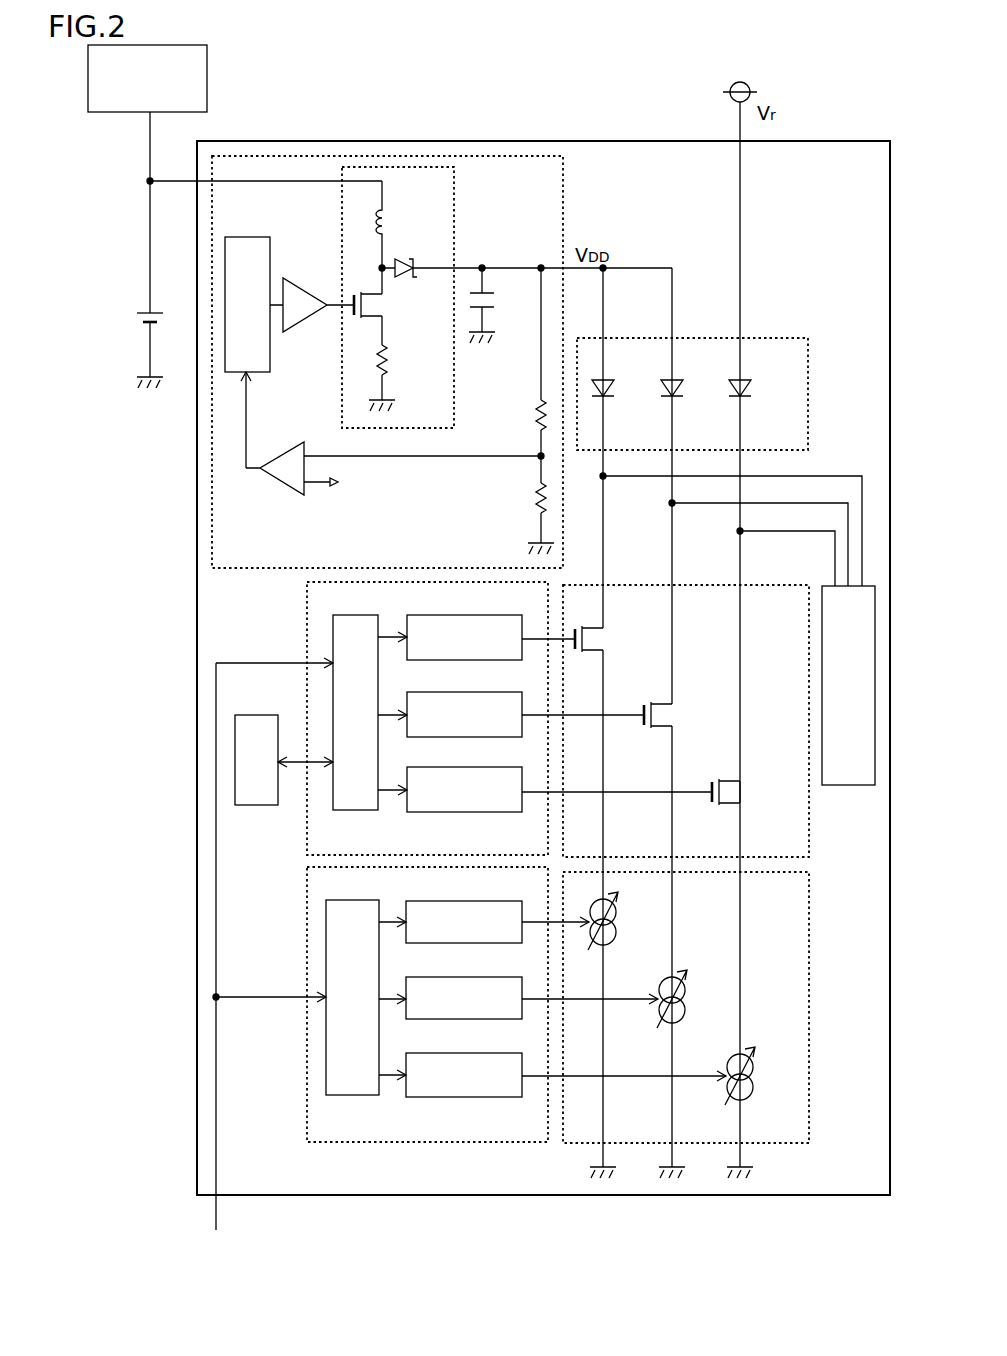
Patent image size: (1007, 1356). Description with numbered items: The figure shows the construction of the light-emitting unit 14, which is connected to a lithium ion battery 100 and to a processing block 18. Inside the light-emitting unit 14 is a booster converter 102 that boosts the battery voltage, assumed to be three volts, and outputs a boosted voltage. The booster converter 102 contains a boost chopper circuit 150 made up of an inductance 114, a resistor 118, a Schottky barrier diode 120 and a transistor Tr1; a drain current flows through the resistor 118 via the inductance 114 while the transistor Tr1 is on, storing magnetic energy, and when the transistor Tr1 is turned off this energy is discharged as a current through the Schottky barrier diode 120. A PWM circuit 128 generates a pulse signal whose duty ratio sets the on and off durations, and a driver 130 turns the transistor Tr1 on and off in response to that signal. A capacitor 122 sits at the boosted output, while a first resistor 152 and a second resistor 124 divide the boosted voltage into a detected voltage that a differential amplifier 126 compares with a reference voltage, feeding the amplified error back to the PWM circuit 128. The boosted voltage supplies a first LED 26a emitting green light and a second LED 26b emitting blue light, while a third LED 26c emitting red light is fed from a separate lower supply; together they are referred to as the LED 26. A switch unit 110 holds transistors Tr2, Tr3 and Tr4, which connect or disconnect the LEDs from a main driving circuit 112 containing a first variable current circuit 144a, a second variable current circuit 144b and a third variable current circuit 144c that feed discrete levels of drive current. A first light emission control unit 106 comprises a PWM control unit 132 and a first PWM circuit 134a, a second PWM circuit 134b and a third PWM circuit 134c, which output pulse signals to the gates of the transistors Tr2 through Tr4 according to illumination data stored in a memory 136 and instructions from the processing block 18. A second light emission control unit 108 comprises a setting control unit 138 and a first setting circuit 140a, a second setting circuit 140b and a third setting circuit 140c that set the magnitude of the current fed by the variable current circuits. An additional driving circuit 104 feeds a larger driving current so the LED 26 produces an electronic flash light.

The light-emitting unit 14 is at (475, 141).
The processing block 18 is at (208, 76).
The lithium ion battery 100 is at (143, 322).
The booster converter 102 is at (563, 187).
The additional driving circuit 104 is at (850, 786).
The first light emission control unit 106 is at (399, 718).
The second light emission control unit 108 is at (399, 1004).
The switch unit 110 is at (699, 723).
The main driving circuit 112 is at (699, 1007).
The inductance 114 is at (384, 213).
The resistor 118 is at (390, 360).
The Schottky barrier diode 120 is at (405, 257).
The capacitor 122 is at (494, 300).
The second resistor 124 is at (534, 498).
The differential amplifier 126 is at (275, 440).
The PWM circuit 128 is at (246, 236).
The driver 130 is at (300, 277).
The PWM control unit 132 is at (365, 615).
The first PWM circuit 134a is at (470, 616).
The second PWM circuit 134b is at (470, 693).
The third PWM circuit 134c is at (470, 768).
The memory 136 is at (257, 714).
The setting control unit 138 is at (365, 900).
The first setting circuit 140a is at (470, 901).
The second setting circuit 140b is at (470, 977).
The third setting circuit 140c is at (470, 1053).
The first variable current circuit 144a is at (612, 948).
The second variable current circuit 144b is at (681, 1025).
The third variable current circuit 144c is at (749, 1103).
The boost chopper circuit 150 is at (455, 232).
The first resistor 152 is at (534, 416).
The LED 26 is at (717, 394).
The first LED 26a is at (614, 385).
The second LED 26b is at (683, 385).
The third LED 26c is at (751, 385).
The transistor Tr1 is at (392, 307).
The transistor Tr2 is at (605, 640).
The transistor Tr3 is at (674, 716).
The transistor Tr4 is at (743, 793).